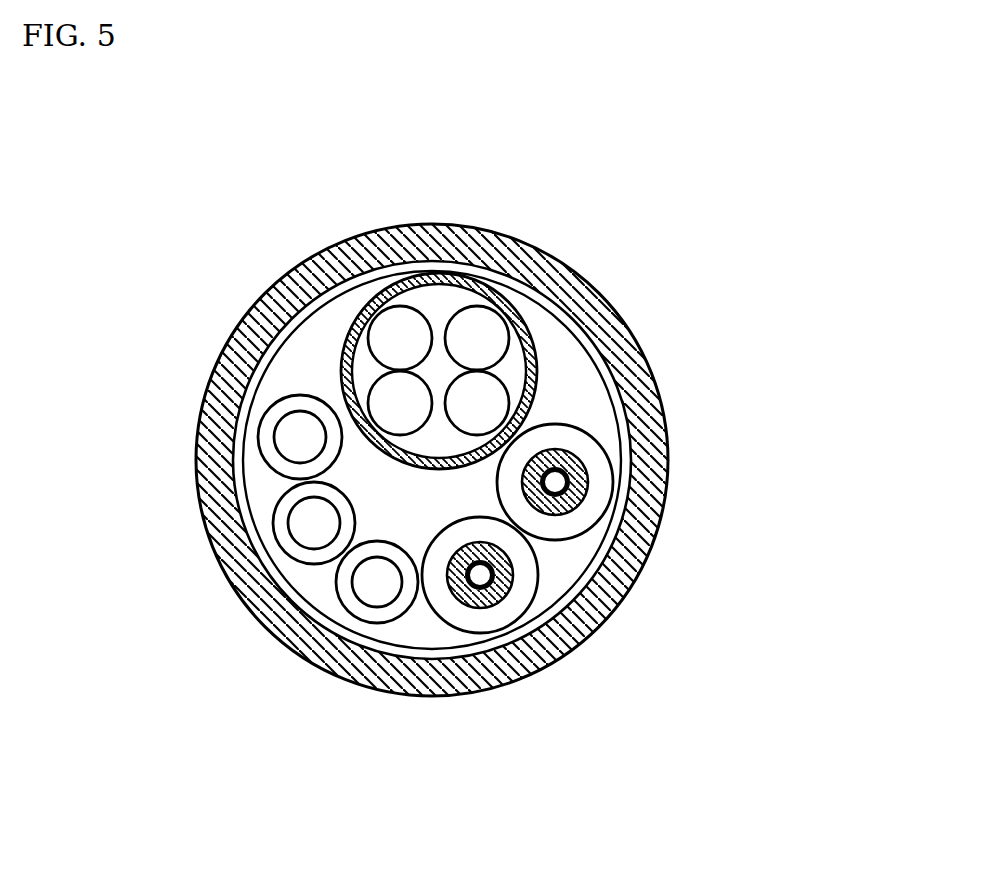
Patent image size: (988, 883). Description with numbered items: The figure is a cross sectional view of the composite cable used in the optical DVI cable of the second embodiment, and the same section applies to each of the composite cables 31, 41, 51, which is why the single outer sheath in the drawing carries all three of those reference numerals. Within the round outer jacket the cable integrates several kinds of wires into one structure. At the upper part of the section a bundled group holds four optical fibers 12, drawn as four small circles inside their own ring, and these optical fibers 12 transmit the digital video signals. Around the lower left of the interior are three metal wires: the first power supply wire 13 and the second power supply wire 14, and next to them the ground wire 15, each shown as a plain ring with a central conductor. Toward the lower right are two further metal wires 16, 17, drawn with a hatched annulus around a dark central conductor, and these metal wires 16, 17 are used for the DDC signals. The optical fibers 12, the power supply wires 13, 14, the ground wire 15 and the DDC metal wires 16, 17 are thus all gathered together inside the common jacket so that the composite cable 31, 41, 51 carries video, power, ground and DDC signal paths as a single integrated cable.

The optical fiber 12 is at (398, 322).
The first power supply wire 13 is at (297, 437).
The second power supply wire 14 is at (312, 537).
The ground wire 15 is at (377, 595).
The metal wire 16 is at (507, 592).
The metal wire 17 is at (570, 500).
The composite cable 31 is at (529, 460).
The composite cable 41 is at (529, 460).
The composite cable 51 is at (663, 425).